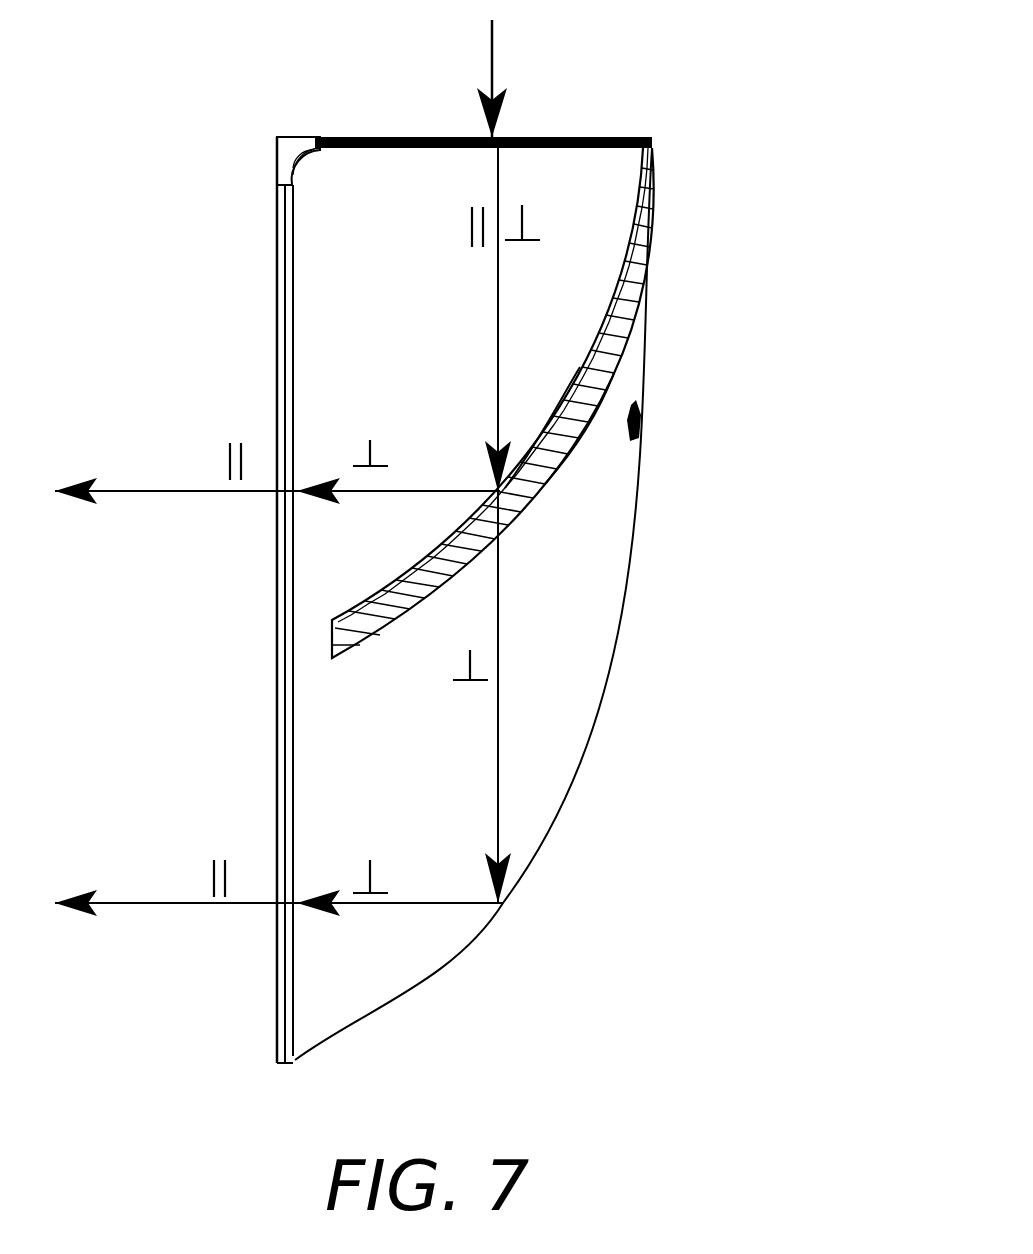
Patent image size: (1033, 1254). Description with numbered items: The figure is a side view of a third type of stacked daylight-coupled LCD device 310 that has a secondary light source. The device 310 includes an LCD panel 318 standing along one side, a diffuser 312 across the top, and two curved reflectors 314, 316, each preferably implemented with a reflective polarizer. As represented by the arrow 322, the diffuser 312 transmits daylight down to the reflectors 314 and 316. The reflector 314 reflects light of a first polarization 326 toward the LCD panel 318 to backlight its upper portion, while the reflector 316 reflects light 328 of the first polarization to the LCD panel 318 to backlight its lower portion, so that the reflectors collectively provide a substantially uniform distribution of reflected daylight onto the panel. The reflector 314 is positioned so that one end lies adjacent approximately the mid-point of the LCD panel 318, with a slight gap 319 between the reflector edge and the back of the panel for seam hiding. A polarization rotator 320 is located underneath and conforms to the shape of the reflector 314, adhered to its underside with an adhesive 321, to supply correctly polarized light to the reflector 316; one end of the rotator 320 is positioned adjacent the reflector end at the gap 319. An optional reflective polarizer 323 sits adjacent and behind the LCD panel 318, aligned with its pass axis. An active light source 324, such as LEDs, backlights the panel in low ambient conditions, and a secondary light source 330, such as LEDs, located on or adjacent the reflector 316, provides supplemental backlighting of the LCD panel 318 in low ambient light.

The daylight-coupled LCD device 310 is at (676, 48).
The diffuser 312 is at (590, 136).
The curved reflector 314 is at (582, 366).
The curved reflector 316 is at (563, 806).
The LCD panel 318 is at (284, 324).
The gap 319 is at (292, 651).
The polarization rotator 320 is at (527, 512).
The adhesive 321 is at (545, 480).
The arrow 322 is at (491, 40).
The reflective polarizer 323 is at (296, 253).
The active light source 324 is at (292, 140).
The light of a first polarization 326 is at (433, 490).
The light of the first polarization 328 is at (433, 902).
The secondary light source 330 is at (641, 455).